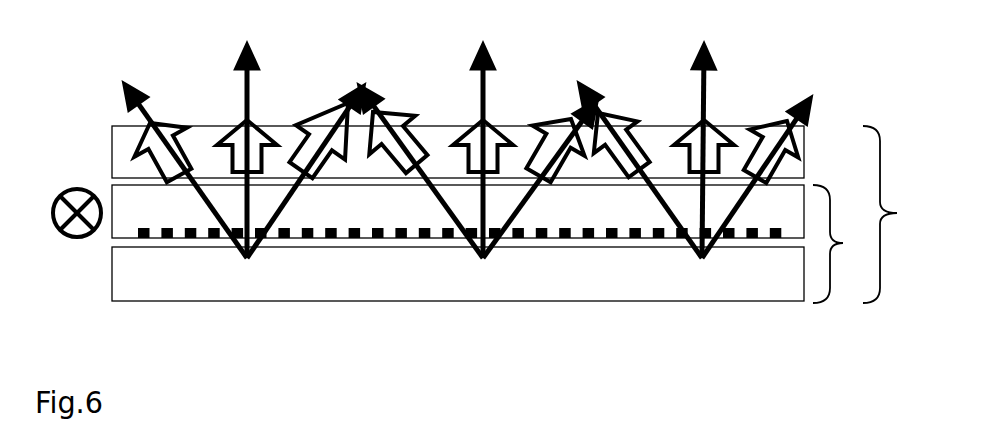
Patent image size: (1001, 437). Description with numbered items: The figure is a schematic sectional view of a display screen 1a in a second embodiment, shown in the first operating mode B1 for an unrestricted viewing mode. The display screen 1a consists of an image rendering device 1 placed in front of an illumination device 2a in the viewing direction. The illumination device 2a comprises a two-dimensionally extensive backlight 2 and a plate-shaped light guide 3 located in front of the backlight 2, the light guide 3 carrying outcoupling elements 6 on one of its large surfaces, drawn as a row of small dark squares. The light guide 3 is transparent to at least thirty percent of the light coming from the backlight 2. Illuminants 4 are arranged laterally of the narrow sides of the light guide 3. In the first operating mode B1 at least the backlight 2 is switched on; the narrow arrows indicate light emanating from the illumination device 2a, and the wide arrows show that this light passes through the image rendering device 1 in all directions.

The image rendering device 1 is at (461, 138).
The display screen 1a is at (896, 214).
The backlight 2 is at (458, 274).
The illumination device 2a is at (845, 244).
The light guide 3 is at (458, 211).
The illuminants 4 is at (76, 187).
The outcoupling elements 6 is at (290, 238).
The first operating mode B1 is at (467, 132).